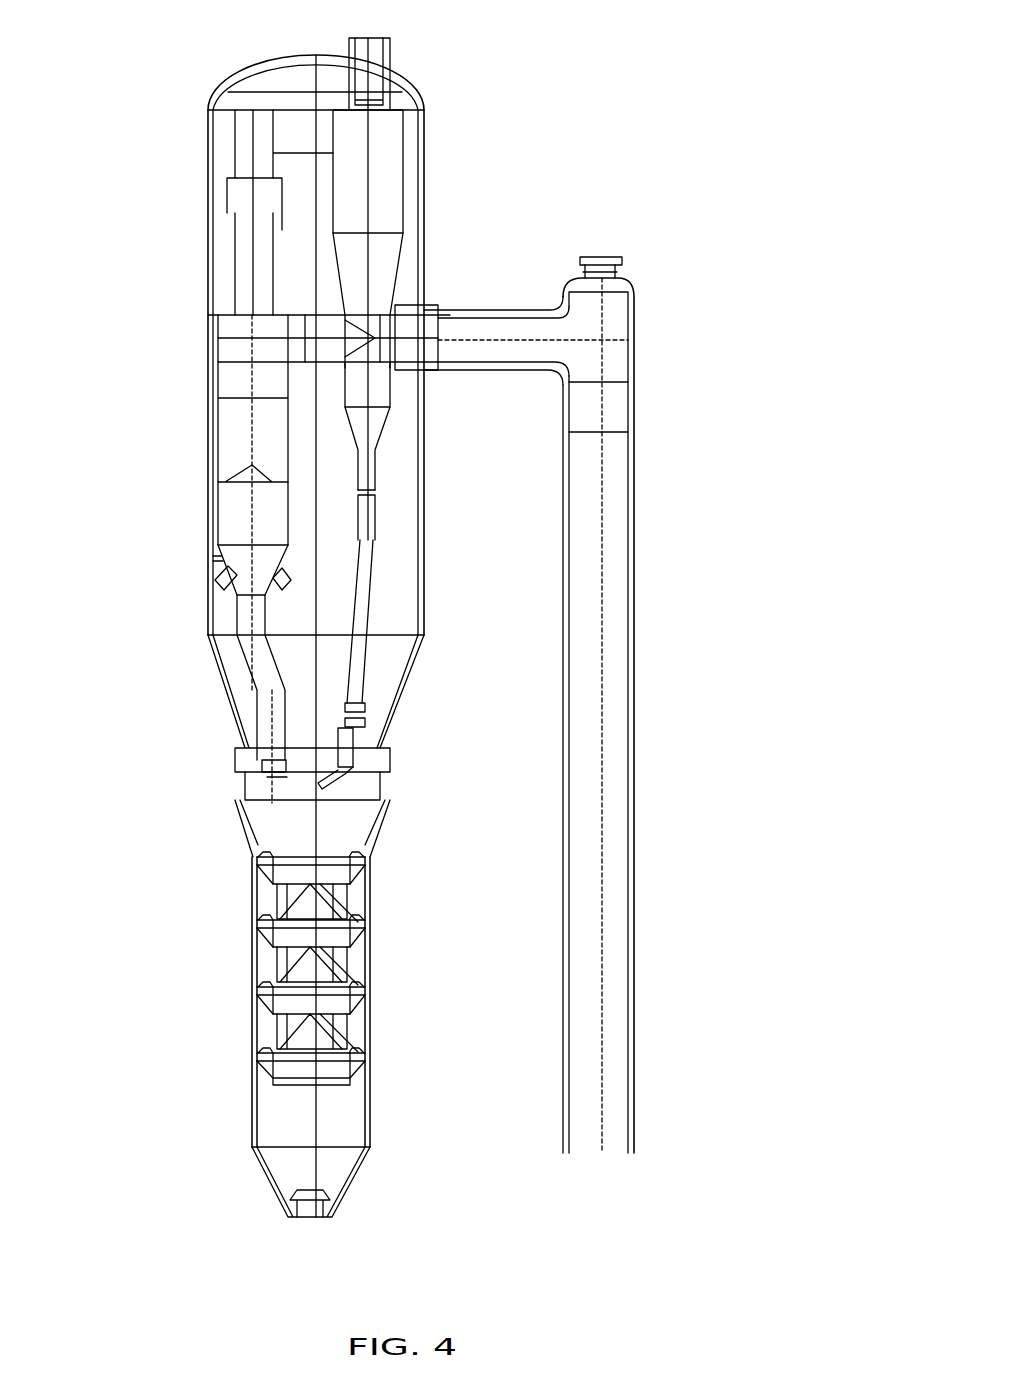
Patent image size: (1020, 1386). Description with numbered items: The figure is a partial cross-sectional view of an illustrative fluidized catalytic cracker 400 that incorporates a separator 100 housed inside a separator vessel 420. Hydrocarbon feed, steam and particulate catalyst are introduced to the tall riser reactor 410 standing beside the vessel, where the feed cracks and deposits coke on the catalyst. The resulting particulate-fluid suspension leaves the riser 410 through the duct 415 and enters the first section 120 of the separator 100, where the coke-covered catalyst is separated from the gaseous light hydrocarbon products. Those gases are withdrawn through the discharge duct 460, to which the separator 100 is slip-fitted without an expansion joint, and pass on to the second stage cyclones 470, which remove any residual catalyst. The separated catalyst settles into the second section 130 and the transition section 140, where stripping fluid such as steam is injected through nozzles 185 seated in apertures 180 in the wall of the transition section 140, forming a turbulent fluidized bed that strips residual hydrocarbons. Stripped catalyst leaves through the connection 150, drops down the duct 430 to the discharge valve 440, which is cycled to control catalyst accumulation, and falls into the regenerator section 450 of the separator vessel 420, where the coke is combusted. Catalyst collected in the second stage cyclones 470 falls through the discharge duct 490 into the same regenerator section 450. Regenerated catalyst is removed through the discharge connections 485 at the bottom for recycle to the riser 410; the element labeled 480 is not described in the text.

The fluidized catalytic cracker 400 is at (646, 66).
The separator 100 is at (218, 315).
The first section 120 is at (218, 420).
The second section 130 is at (218, 500).
The transition section 140 is at (205, 558).
The connection 150 is at (237, 617).
The apertures 180 is at (215, 567).
The nozzles 185 is at (237, 587).
The riser reactor 410 is at (635, 692).
The duct 415 is at (493, 310).
The separator vessel 420 is at (420, 432).
The duct 430 is at (253, 668).
The discharge valve 440 is at (237, 757).
The regenerator section 450 is at (255, 955).
The discharge duct 460 is at (226, 198).
The second stage cyclones 470 is at (403, 165).
The gas outlet 480 is at (390, 47).
The discharge connections 485 is at (302, 1217).
The discharge duct 490 is at (372, 580).